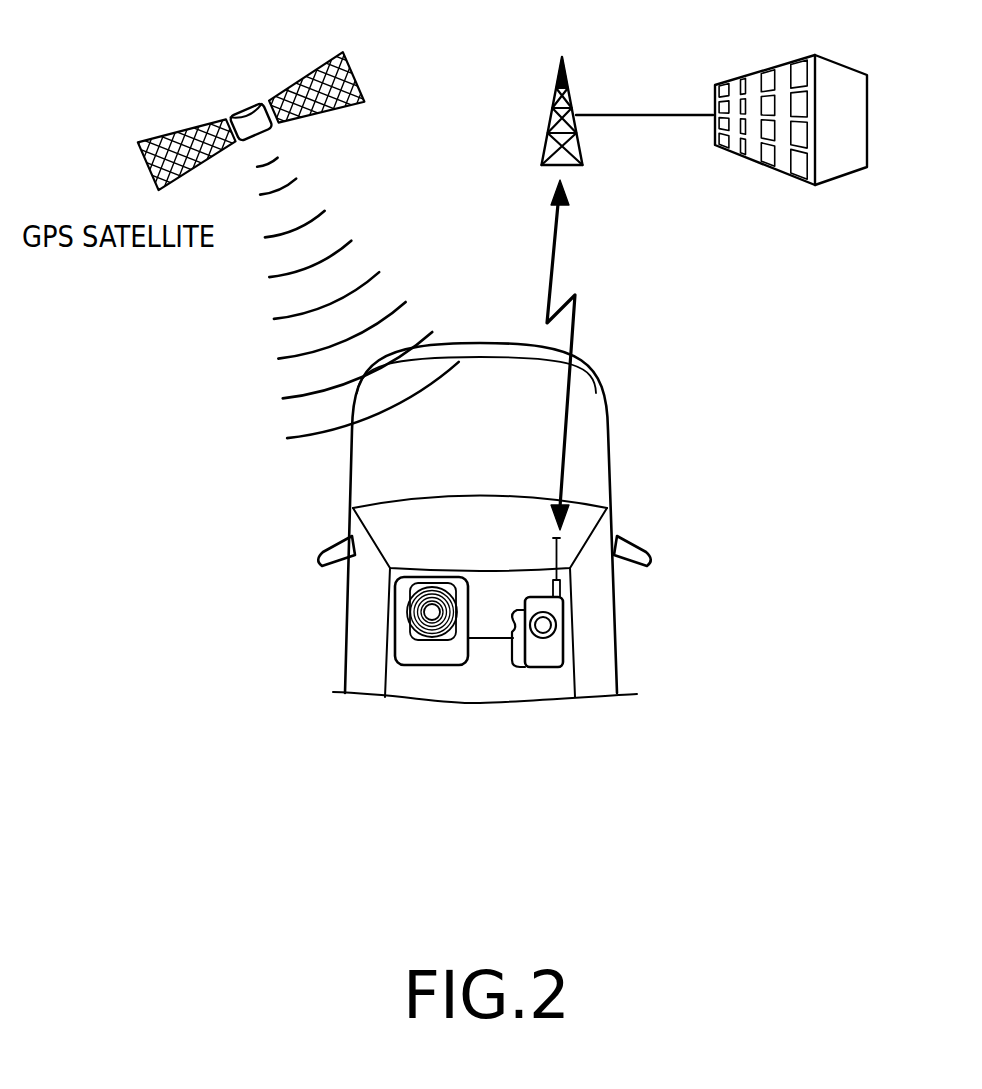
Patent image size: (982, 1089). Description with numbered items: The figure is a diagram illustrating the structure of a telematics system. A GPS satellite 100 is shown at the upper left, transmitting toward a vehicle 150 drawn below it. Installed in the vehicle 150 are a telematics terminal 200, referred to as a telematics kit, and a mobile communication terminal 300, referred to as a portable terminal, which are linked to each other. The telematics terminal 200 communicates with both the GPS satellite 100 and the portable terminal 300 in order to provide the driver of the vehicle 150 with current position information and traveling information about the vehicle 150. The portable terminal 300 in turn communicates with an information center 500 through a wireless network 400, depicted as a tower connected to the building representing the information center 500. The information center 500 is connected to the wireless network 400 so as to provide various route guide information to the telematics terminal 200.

The GPS satellite 100 is at (354, 77).
The vehicle 150 is at (615, 452).
The telematics terminal 200 is at (419, 658).
The mobile communication terminal 300 is at (540, 660).
The wireless network 400 is at (569, 84).
The information center 500 is at (838, 63).